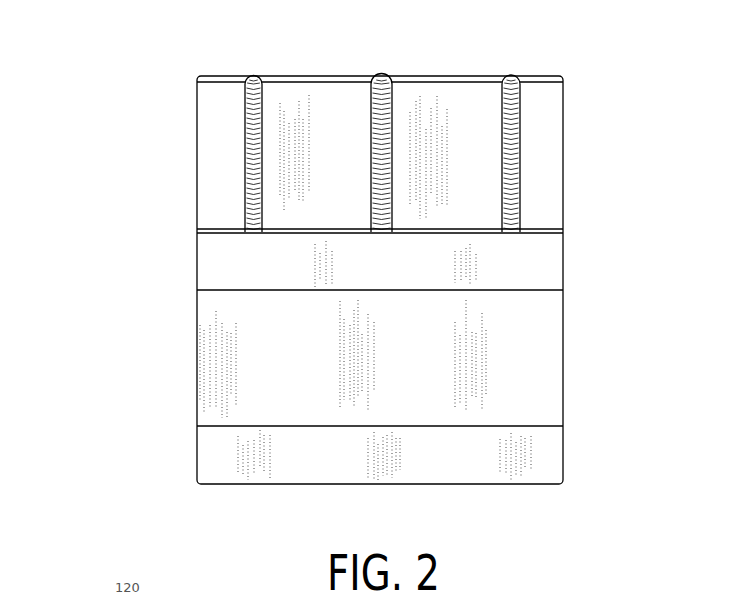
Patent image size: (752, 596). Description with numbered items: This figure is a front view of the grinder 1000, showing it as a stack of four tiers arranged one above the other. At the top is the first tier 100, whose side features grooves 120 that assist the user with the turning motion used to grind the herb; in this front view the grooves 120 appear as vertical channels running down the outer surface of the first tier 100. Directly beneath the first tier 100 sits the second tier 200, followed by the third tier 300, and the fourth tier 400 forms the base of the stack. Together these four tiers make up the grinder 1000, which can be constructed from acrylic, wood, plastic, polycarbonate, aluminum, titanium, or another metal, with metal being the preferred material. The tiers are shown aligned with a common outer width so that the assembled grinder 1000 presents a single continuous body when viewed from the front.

The grinder 1000 is at (125, 268).
The first tier 100 is at (552, 162).
The grooves 120 is at (252, 103).
The second tier 200 is at (548, 265).
The third tier 300 is at (548, 367).
The fourth tier 400 is at (545, 457).